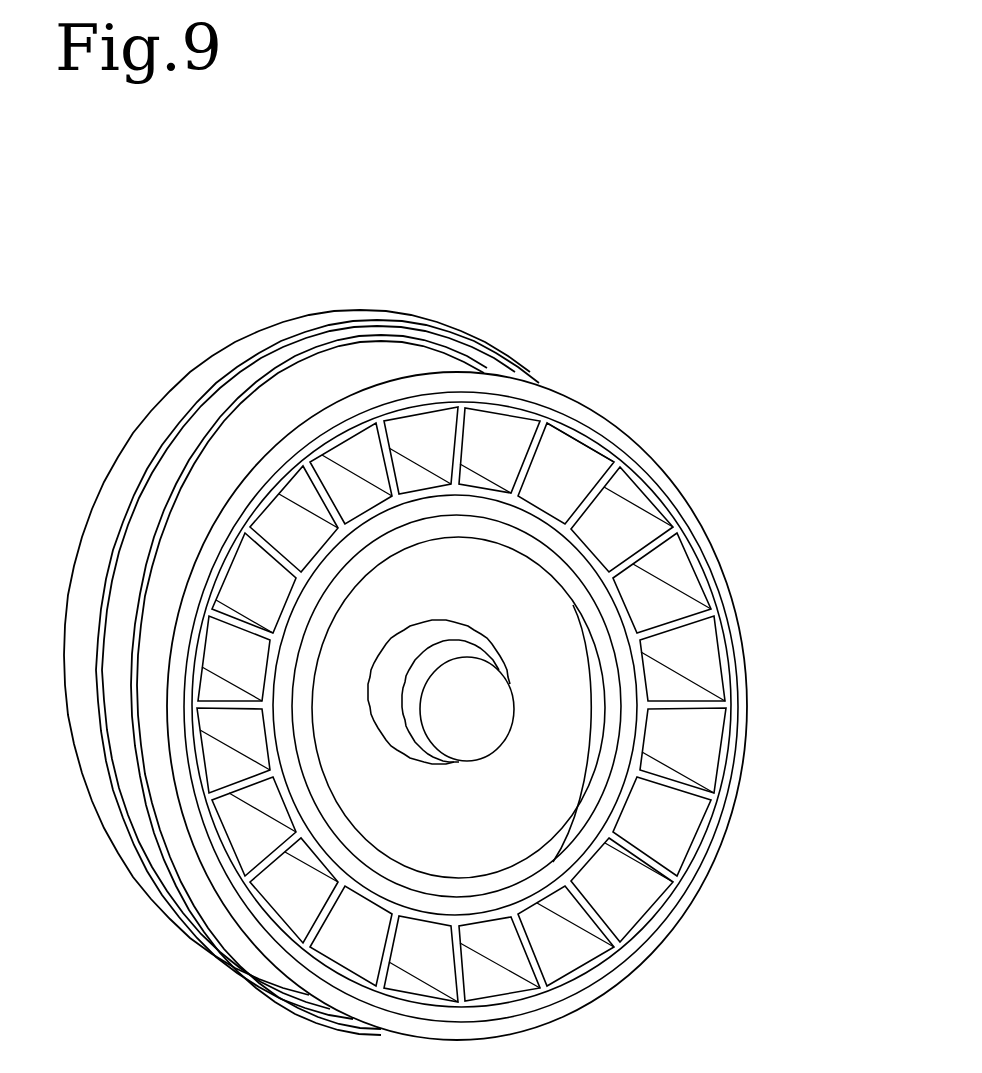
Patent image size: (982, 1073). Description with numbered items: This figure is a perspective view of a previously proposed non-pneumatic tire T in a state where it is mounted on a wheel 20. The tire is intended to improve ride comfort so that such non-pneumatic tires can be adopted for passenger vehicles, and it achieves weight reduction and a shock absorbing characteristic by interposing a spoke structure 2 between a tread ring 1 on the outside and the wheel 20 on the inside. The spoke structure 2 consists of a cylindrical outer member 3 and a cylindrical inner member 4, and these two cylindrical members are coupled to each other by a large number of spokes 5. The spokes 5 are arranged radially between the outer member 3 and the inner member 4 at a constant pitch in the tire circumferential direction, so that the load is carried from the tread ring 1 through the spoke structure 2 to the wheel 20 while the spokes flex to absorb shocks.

The non-pneumatic tire T is at (157, 393).
The tread ring 1 is at (486, 382).
The spoke structure 2 is at (586, 416).
The cylindrical outer member 3 is at (645, 478).
The cylindrical inner member 4 is at (626, 601).
The spokes 5 is at (697, 629).
The wheel 20 is at (609, 749).